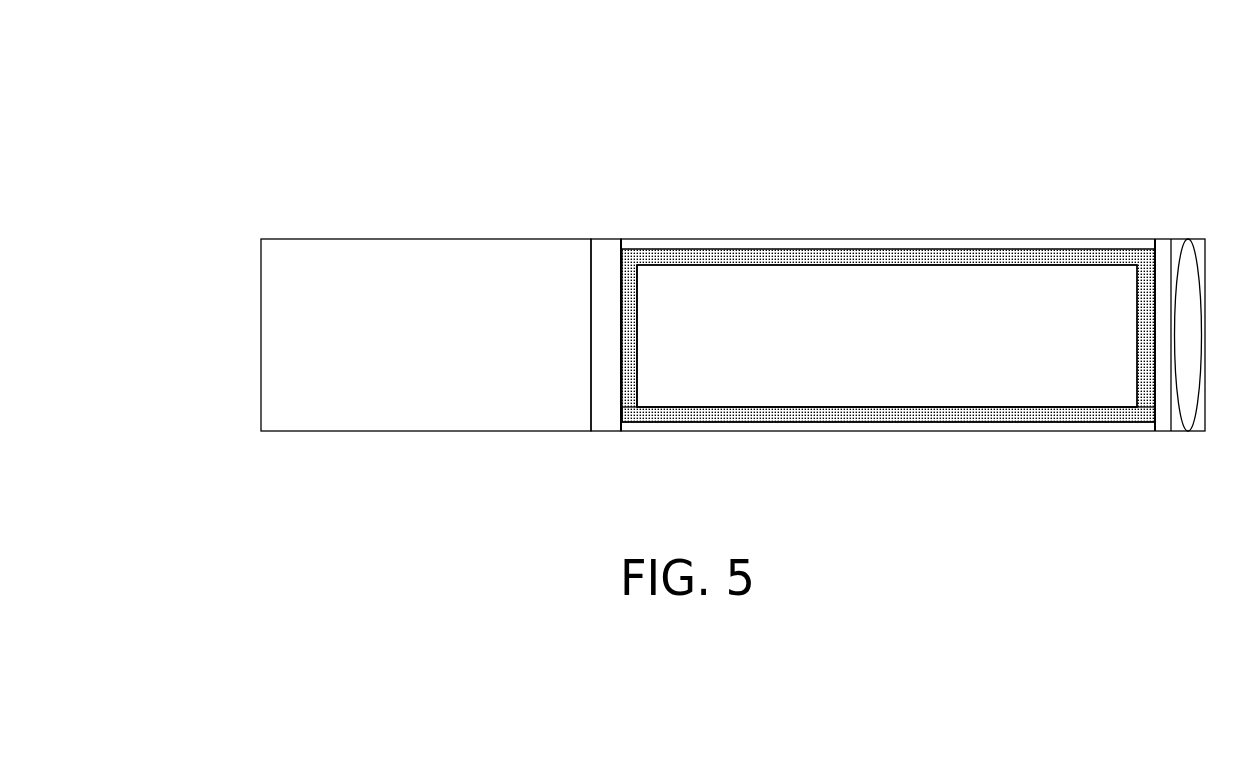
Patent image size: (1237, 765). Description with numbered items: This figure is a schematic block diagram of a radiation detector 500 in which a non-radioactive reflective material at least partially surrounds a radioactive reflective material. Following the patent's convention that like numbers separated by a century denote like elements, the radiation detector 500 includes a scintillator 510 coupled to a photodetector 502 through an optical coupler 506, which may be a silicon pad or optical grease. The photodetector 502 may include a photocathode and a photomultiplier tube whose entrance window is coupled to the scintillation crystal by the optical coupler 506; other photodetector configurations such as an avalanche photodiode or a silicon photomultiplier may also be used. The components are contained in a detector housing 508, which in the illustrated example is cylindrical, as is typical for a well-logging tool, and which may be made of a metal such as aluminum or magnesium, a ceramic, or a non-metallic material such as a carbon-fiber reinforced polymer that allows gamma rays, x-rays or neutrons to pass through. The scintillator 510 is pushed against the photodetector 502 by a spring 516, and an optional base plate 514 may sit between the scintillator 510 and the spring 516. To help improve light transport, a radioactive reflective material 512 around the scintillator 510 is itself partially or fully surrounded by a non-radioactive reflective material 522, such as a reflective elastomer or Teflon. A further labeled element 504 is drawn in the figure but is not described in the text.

The radiation detector 500 is at (699, 264).
The photodetector 502 is at (392, 313).
The optical coupling section 504 is at (577, 351).
The optical coupler 506 is at (586, 311).
The detector housing 508 is at (913, 310).
The scintillator 510 is at (887, 299).
The radioactive reflective material 512 is at (888, 306).
The base plate 514 is at (1124, 310).
The spring 516 is at (1156, 356).
The non-radioactive reflective material 522 is at (888, 436).